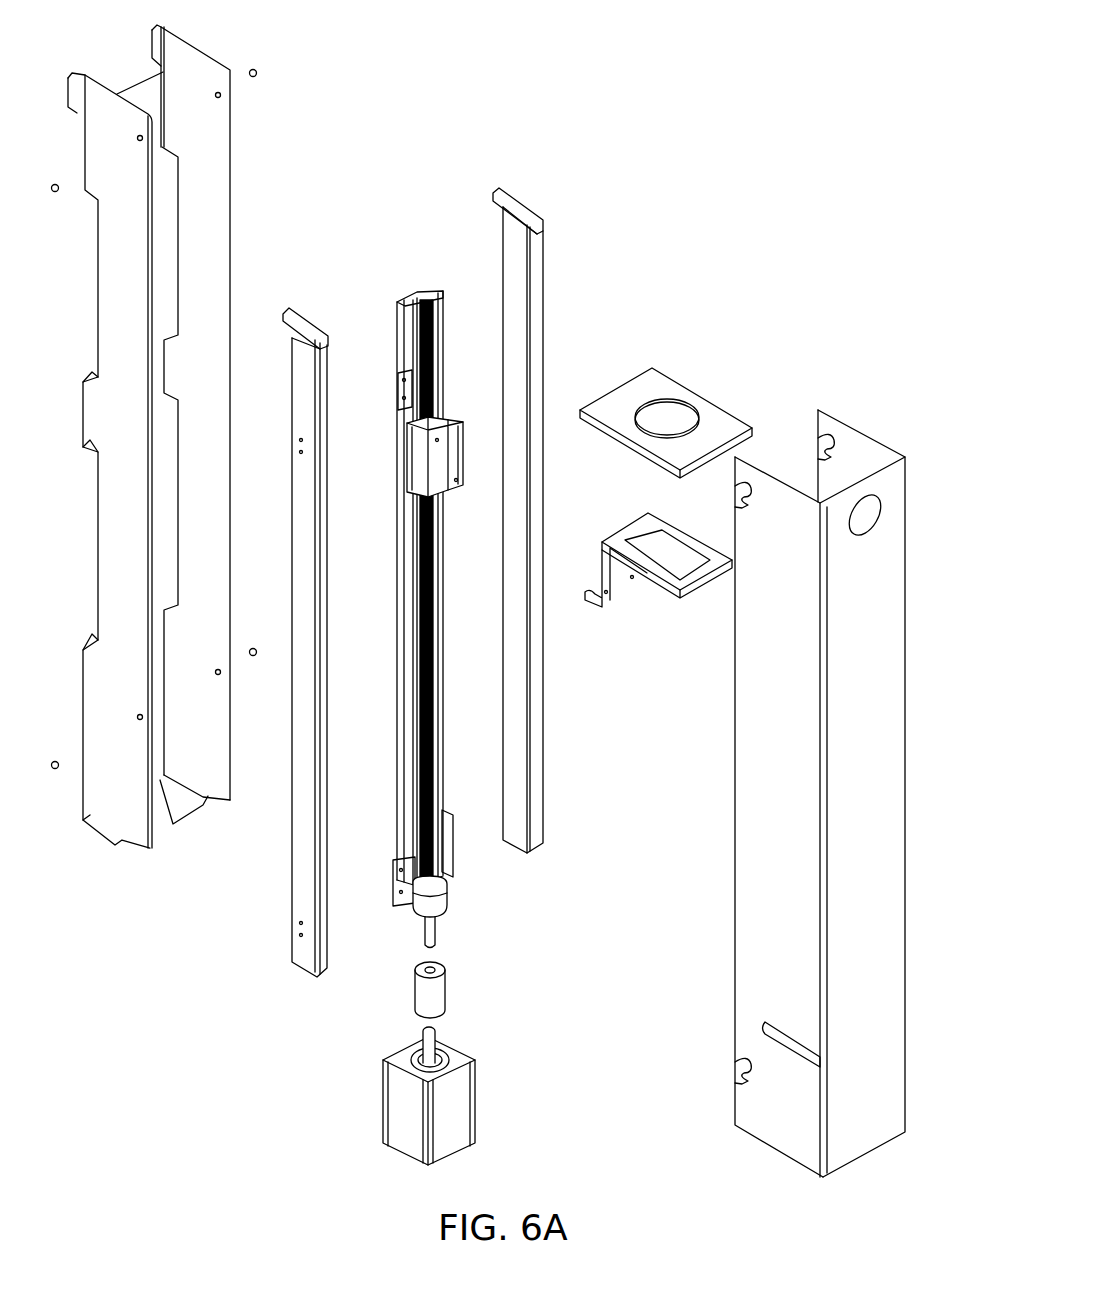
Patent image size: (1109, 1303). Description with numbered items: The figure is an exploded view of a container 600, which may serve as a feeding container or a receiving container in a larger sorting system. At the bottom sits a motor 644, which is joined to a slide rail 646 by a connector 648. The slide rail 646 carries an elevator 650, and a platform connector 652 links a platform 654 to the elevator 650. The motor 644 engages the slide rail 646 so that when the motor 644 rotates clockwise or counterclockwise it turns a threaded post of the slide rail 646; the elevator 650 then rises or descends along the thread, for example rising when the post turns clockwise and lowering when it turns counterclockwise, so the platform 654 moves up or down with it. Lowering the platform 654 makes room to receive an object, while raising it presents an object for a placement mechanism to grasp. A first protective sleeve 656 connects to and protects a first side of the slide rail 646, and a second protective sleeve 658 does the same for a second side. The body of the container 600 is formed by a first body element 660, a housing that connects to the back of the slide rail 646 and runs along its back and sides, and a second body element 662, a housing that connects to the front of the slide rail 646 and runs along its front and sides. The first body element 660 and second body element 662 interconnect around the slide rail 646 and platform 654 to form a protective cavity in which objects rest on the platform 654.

The container 600 is at (625, 88).
The motor 644 is at (475, 1100).
The slide rail 646 is at (430, 290).
The connector 648 is at (442, 988).
The elevator 650 is at (450, 417).
The platform connector 652 is at (617, 577).
The platform 654 is at (650, 387).
The first protective sleeve 656 is at (527, 213).
The second protective sleeve 658 is at (307, 322).
The first body element 660 is at (230, 250).
The second body element 662 is at (852, 422).